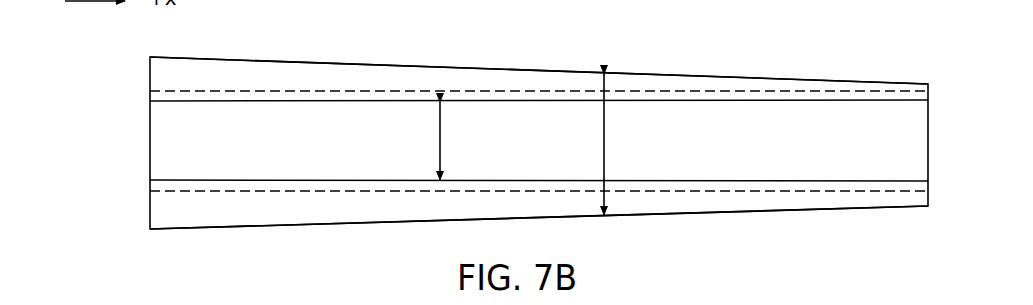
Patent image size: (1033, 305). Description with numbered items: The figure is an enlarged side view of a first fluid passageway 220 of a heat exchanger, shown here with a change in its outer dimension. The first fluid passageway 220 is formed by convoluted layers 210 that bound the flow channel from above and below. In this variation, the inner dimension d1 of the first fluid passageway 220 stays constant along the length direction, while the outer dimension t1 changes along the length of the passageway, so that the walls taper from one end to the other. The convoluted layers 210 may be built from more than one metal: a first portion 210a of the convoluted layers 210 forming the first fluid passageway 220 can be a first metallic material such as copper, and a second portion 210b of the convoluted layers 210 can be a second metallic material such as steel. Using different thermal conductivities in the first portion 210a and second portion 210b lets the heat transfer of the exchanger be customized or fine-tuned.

The convoluted layer 210 is at (807, 80).
The first portion 210a is at (358, 77).
The second portion 210b is at (247, 92).
The first fluid passageway 220 is at (183, 155).
The inner dimension d1 is at (421, 141).
The outer dimension t1 is at (588, 144).